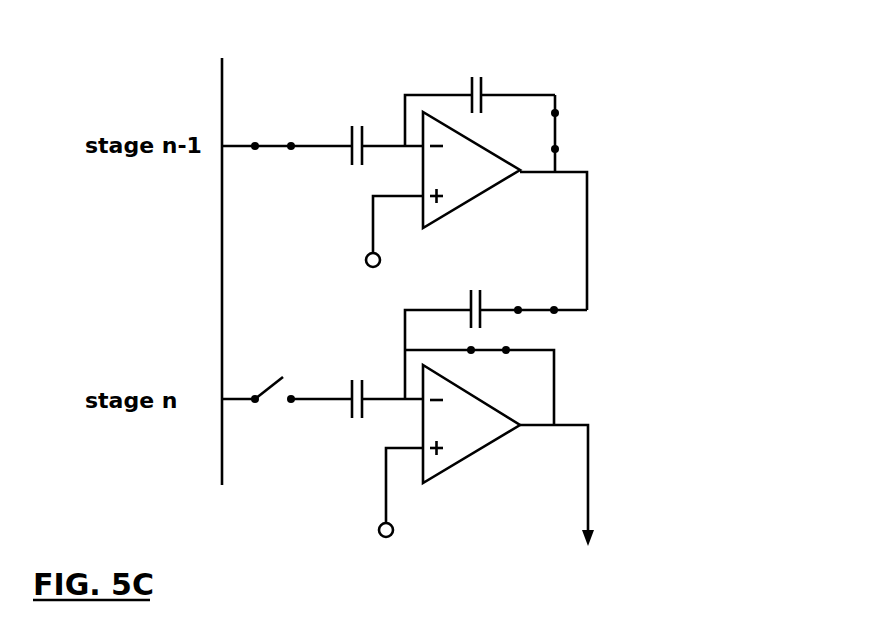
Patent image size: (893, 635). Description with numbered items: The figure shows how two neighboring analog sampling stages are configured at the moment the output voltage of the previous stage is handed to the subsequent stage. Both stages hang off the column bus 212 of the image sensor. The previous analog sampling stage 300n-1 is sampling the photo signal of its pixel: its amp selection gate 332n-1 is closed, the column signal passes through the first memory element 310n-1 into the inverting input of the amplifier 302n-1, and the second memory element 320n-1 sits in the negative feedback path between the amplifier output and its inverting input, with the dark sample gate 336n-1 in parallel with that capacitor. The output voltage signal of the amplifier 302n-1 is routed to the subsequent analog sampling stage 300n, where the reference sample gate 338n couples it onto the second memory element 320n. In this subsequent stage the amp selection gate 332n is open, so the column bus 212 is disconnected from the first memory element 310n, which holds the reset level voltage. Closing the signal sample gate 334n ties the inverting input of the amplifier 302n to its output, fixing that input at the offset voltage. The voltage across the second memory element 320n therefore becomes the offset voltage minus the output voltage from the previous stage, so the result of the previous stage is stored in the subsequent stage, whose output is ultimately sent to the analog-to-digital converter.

The column bus 212 is at (222, 90).
The analog sampling stage 300n-1 is at (481, 160).
The analog sampling stage 300n is at (495, 398).
The amplifier 302n-1 is at (465, 203).
The amplifier 302n is at (472, 457).
The first memory element 310n-1 is at (357, 168).
The first memory element 310n is at (357, 420).
The second memory element 320n-1 is at (473, 77).
The second memory element 320n is at (477, 289).
The amp selection gate 332n-1 is at (272, 146).
The amp selection gate 332n is at (272, 381).
The signal sample gate 334n is at (488, 350).
The dark sample gate 336n-1 is at (555, 132).
The reference sample gate 338n is at (536, 309).